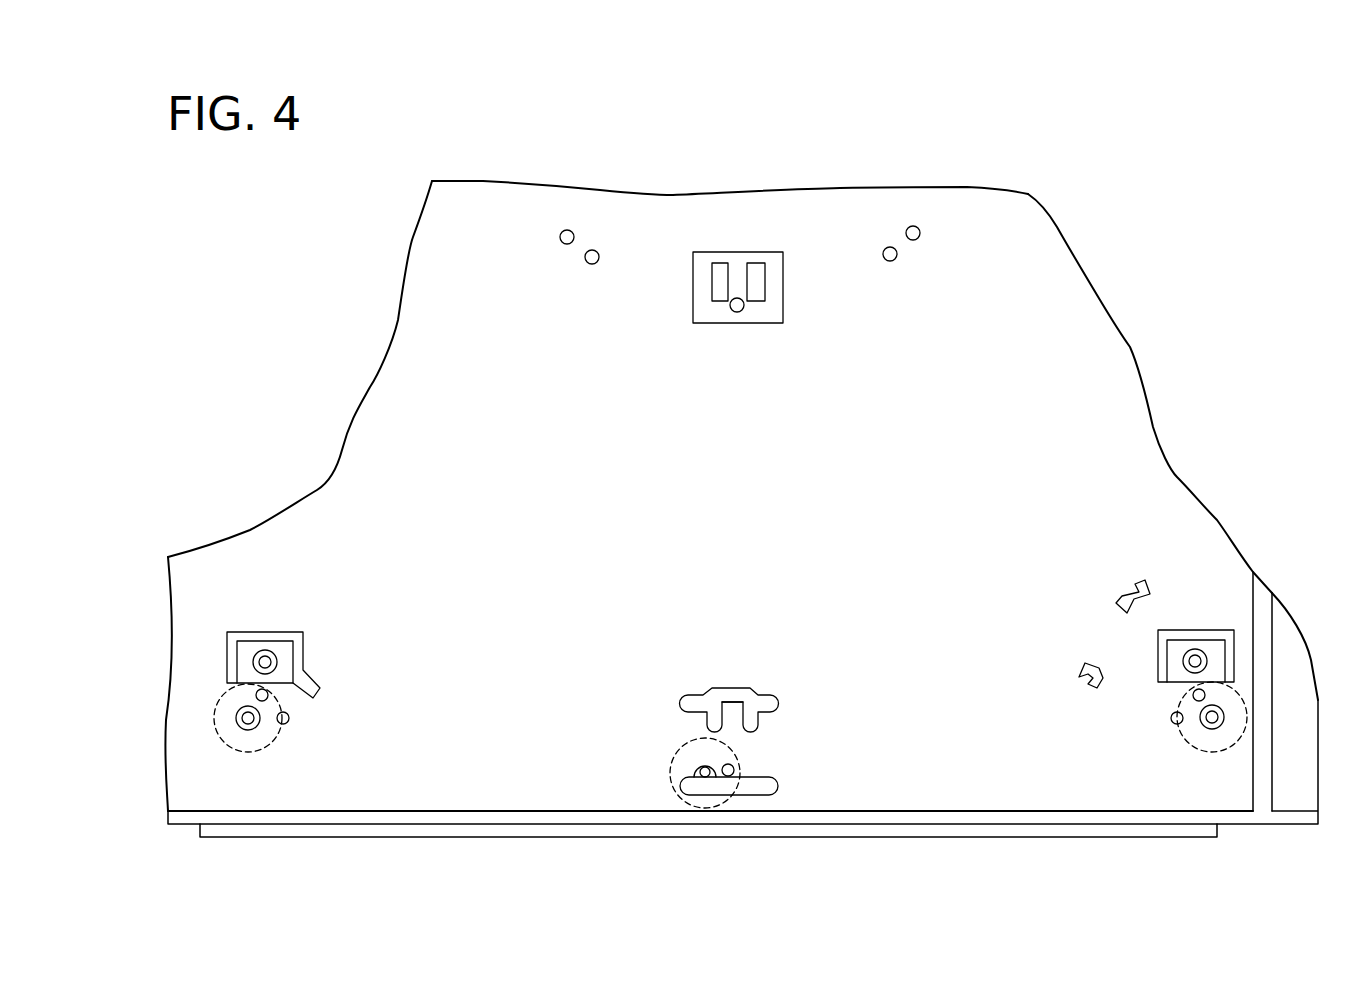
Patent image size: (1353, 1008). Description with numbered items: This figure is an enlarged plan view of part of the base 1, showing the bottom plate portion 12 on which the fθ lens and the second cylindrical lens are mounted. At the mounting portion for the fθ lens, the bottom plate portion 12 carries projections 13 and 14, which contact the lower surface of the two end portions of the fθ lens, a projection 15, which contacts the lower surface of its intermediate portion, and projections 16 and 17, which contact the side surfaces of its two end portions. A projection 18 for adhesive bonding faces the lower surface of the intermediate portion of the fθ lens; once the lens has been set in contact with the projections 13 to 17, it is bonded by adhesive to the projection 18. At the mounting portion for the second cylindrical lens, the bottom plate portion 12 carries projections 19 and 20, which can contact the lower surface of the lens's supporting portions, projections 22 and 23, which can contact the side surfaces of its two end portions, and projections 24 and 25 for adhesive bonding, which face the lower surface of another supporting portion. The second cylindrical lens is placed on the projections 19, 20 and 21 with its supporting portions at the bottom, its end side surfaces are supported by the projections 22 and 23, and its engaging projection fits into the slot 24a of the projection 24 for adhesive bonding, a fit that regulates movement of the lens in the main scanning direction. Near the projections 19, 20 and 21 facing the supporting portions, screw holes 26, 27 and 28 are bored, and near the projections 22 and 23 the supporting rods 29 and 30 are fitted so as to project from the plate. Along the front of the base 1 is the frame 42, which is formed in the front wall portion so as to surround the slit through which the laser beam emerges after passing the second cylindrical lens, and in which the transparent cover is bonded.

The base 1 is at (1130, 428).
The bottom plate portion 12 is at (1107, 357).
The projection 13 is at (890, 247).
The projection 14 is at (592, 250).
The projection 15 is at (737, 298).
The projection 16 is at (915, 226).
The projection 17 is at (567, 230).
The projection for adhesive bonding 18 is at (770, 251).
The projection 19 is at (1170, 720).
The projection 20 is at (286, 724).
The projection 21 is at (734, 768).
The projection 22 is at (1193, 697).
The projection 23 is at (268, 698).
The projection for adhesive bonding 24 is at (768, 702).
The slot 24a is at (732, 712).
The projection for adhesive bonding 25 is at (763, 787).
The screw hole 26 is at (1212, 729).
The screw hole 27 is at (247, 725).
The screw hole 28 is at (705, 777).
The supporting rod 29 is at (1205, 638).
The supporting rod 30 is at (265, 637).
The frame 42 is at (923, 830).